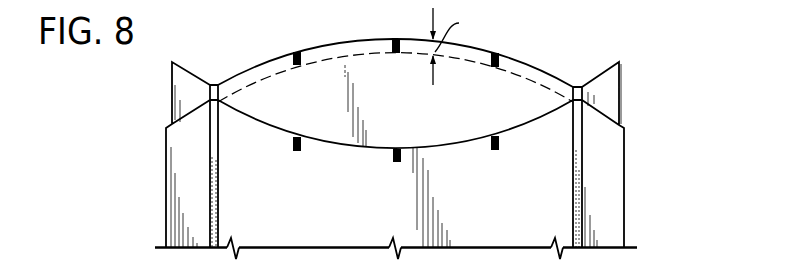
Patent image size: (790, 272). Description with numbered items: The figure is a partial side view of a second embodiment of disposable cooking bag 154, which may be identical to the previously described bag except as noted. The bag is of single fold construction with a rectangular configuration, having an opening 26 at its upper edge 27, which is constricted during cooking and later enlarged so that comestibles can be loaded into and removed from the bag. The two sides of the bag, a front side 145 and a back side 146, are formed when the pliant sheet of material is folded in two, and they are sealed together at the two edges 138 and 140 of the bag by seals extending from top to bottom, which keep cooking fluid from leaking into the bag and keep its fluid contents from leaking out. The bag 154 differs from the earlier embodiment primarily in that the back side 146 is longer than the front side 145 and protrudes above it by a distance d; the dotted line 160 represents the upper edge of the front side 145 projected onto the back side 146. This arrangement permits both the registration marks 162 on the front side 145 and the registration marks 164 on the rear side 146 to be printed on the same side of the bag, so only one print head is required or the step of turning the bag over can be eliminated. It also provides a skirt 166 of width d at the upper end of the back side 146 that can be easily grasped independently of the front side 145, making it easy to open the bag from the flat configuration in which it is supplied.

The opening 26 is at (490, 93).
The upper edge 27 is at (487, 135).
The edge of the bag 138 is at (166, 171).
The edge of the bag 140 is at (625, 184).
The front side 145 is at (487, 223).
The back side 146 is at (417, 133).
The disposable cooking bag 154 is at (381, 102).
The dotted line 160 is at (250, 82).
The registration marks 162 is at (393, 159).
The registration marks 164 is at (390, 51).
The skirt 166 is at (328, 56).